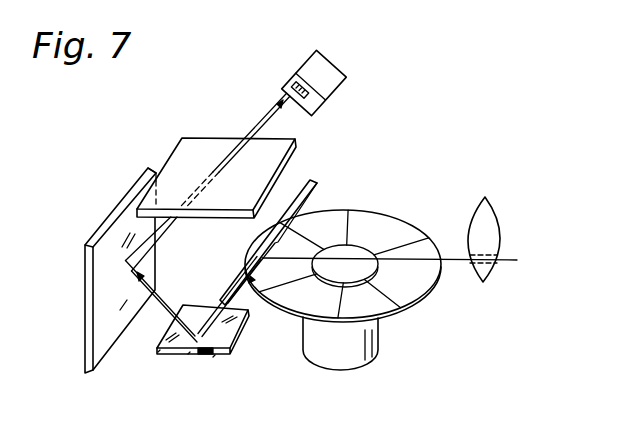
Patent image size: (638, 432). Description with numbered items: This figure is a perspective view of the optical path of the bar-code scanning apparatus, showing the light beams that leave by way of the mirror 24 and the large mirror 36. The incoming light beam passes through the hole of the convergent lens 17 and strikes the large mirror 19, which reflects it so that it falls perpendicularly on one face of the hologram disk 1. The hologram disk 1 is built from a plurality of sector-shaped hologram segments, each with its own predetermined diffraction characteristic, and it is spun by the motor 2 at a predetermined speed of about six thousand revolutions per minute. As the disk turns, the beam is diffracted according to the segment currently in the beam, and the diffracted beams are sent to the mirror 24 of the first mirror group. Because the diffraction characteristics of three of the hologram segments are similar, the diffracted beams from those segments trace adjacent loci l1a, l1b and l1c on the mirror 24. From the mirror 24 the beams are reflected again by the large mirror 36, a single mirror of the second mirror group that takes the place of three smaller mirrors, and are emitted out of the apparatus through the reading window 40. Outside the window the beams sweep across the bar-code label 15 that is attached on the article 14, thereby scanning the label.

The hologram disk 1 is at (404, 222).
The motor 2 is at (378, 345).
The article 14 is at (333, 62).
The bar-code label 15 is at (282, 87).
The convergent lens 17 is at (488, 197).
The large mirror 19 is at (316, 181).
The mirror 24 is at (223, 355).
The large mirror 36 is at (85, 260).
The reading window 40 is at (297, 140).
The locus l1a is at (188, 354).
The locus l1b is at (158, 352).
The locus l1c is at (213, 357).